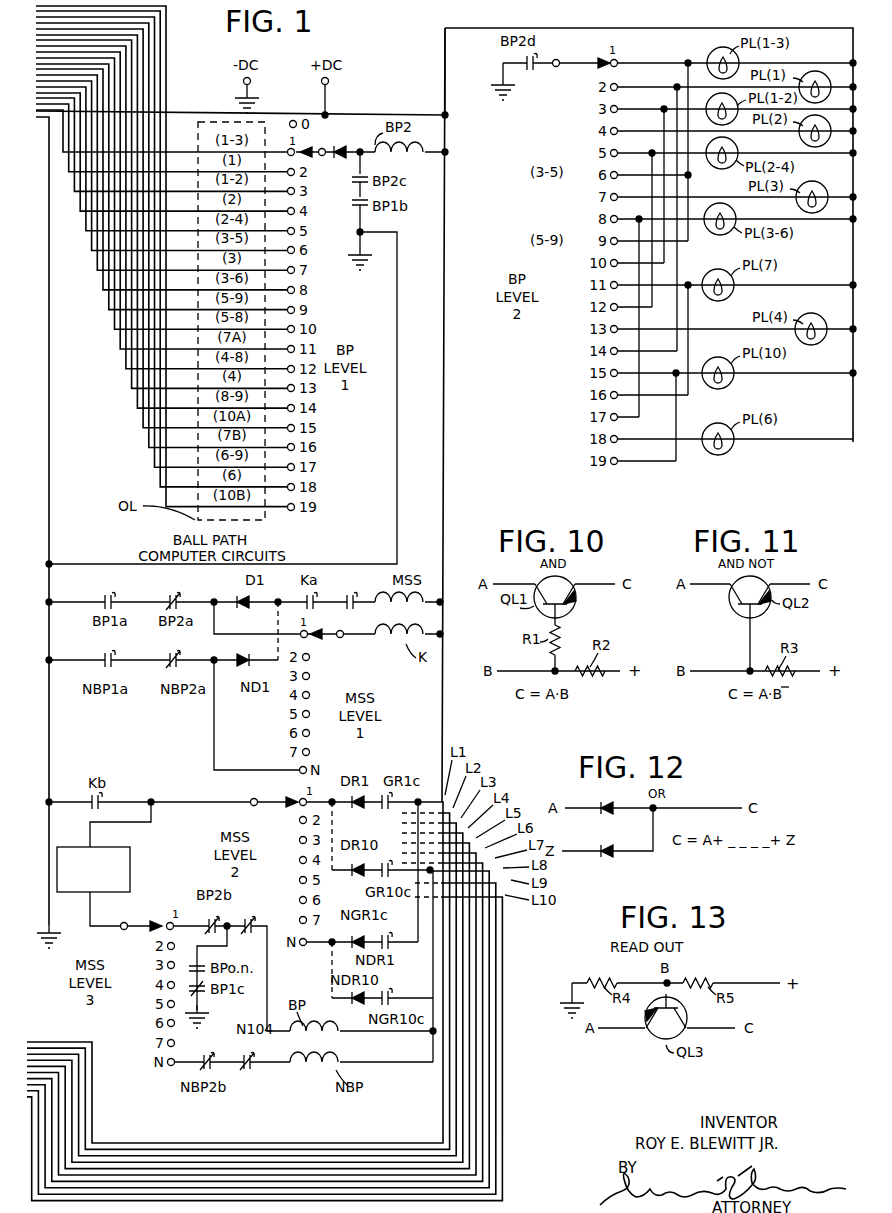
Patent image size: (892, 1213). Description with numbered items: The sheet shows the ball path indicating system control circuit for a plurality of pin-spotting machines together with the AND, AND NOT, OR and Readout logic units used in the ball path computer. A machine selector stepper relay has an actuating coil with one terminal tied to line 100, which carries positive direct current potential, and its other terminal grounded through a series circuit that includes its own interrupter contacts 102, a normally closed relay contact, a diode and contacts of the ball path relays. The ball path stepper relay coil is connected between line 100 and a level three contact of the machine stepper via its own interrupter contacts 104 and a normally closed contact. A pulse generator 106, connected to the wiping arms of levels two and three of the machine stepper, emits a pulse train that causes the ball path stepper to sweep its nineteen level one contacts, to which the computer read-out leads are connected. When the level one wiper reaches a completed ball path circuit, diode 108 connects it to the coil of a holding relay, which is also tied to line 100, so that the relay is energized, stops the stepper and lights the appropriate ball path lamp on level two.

The line 100 is at (445, 326).
The interrupter contacts 102 is at (349, 595).
The interrupter contacts 104 is at (246, 916).
The pulse generator 106 is at (130, 847).
The diode 108 is at (322, 149).